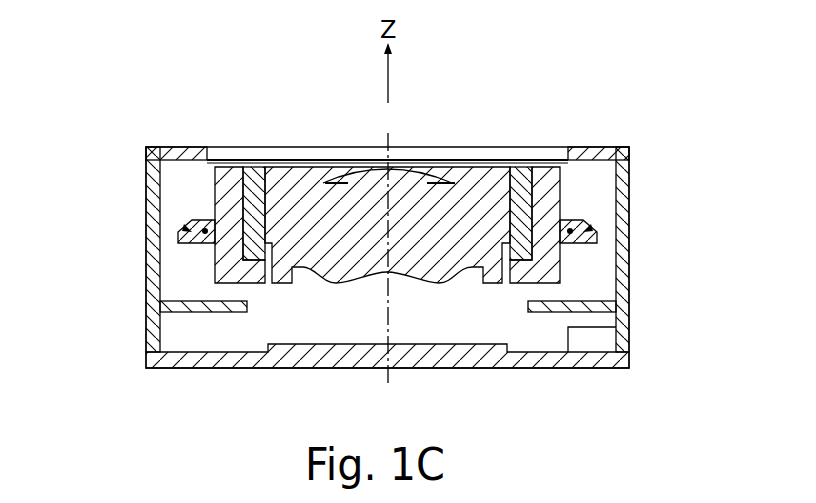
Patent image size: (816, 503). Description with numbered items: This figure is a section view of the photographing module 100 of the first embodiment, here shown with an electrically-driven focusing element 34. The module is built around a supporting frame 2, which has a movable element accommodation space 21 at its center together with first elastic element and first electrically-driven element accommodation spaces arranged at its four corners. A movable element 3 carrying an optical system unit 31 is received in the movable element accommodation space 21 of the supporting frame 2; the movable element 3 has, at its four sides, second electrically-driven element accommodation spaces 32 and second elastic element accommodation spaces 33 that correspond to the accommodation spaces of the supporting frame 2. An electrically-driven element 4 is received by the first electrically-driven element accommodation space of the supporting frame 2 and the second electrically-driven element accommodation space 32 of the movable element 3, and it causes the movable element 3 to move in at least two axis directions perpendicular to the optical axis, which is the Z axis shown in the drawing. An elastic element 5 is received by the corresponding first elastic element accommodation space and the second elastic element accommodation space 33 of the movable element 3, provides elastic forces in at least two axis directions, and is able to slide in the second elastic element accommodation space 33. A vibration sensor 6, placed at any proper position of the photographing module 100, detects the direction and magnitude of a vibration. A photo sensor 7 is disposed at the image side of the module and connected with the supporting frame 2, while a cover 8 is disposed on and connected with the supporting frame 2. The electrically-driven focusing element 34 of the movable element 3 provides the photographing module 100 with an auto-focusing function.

The photographing module 100 is at (692, 83).
The cover 8 is at (630, 199).
The photo sensor 7 is at (453, 353).
The supporting frame 2 is at (622, 308).
The vibration sensor 6 is at (593, 340).
The movable element accommodation space 21 is at (593, 272).
The movable element 3 is at (480, 188).
The optical system unit 31 is at (398, 177).
The electrically-driven focusing element 34 is at (250, 176).
The elastic element 5 is at (327, 205).
The second elastic element accommodation space 33 is at (205, 230).
The electrically-driven element 4 is at (325, 215).
The second electrically-driven element accommodation space 32 is at (190, 231).